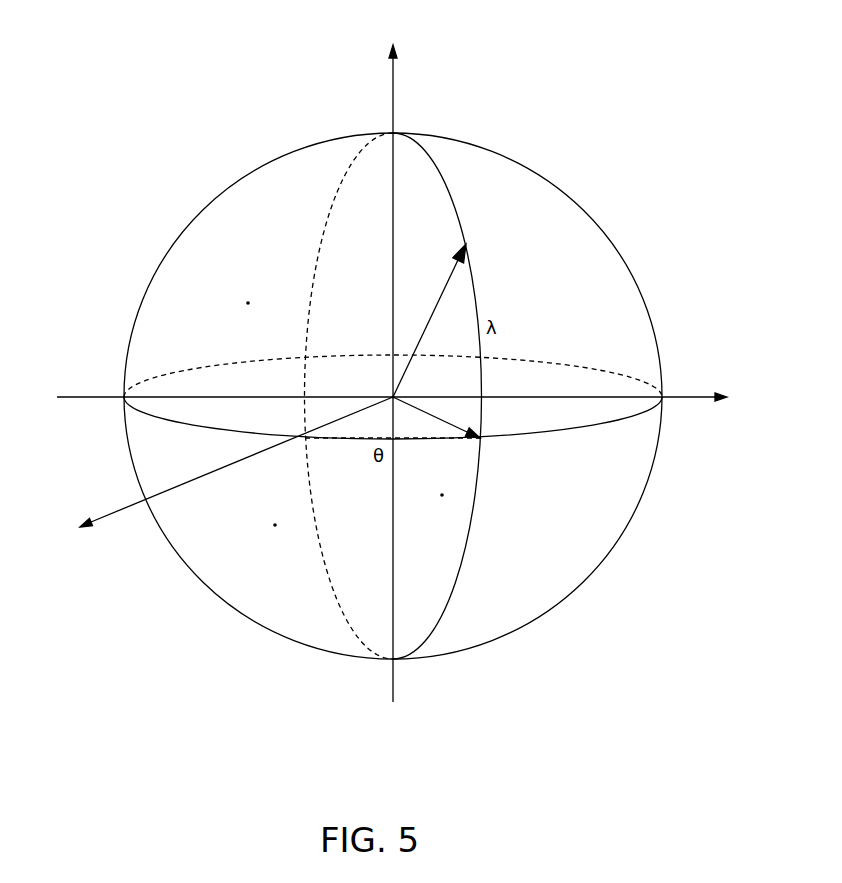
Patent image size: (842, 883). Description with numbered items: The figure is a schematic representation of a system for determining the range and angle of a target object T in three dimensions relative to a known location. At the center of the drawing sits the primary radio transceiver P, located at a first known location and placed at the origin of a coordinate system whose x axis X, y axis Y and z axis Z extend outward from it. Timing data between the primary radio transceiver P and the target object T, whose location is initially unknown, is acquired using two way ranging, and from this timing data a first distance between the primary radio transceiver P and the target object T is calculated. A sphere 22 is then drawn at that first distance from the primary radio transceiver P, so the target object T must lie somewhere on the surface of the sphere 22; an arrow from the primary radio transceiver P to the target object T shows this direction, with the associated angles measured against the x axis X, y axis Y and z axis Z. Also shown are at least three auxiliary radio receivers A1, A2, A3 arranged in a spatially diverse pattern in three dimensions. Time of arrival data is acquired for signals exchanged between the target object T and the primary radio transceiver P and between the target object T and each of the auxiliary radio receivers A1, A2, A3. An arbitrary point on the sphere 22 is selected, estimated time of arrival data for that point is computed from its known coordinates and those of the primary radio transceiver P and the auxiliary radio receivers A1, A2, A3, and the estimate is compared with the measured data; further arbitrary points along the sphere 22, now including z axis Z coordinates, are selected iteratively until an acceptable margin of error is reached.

The sphere 22 is at (602, 232).
The z axis Z is at (391, 362).
The y axis Y is at (400, 398).
The x axis X is at (228, 469).
The target object T is at (434, 314).
The primary radio transceiver P is at (385, 387).
The auxiliary radio receiver A1 is at (259, 308).
The auxiliary radio receiver A2 is at (285, 532).
The auxiliary radio receiver A3 is at (452, 503).